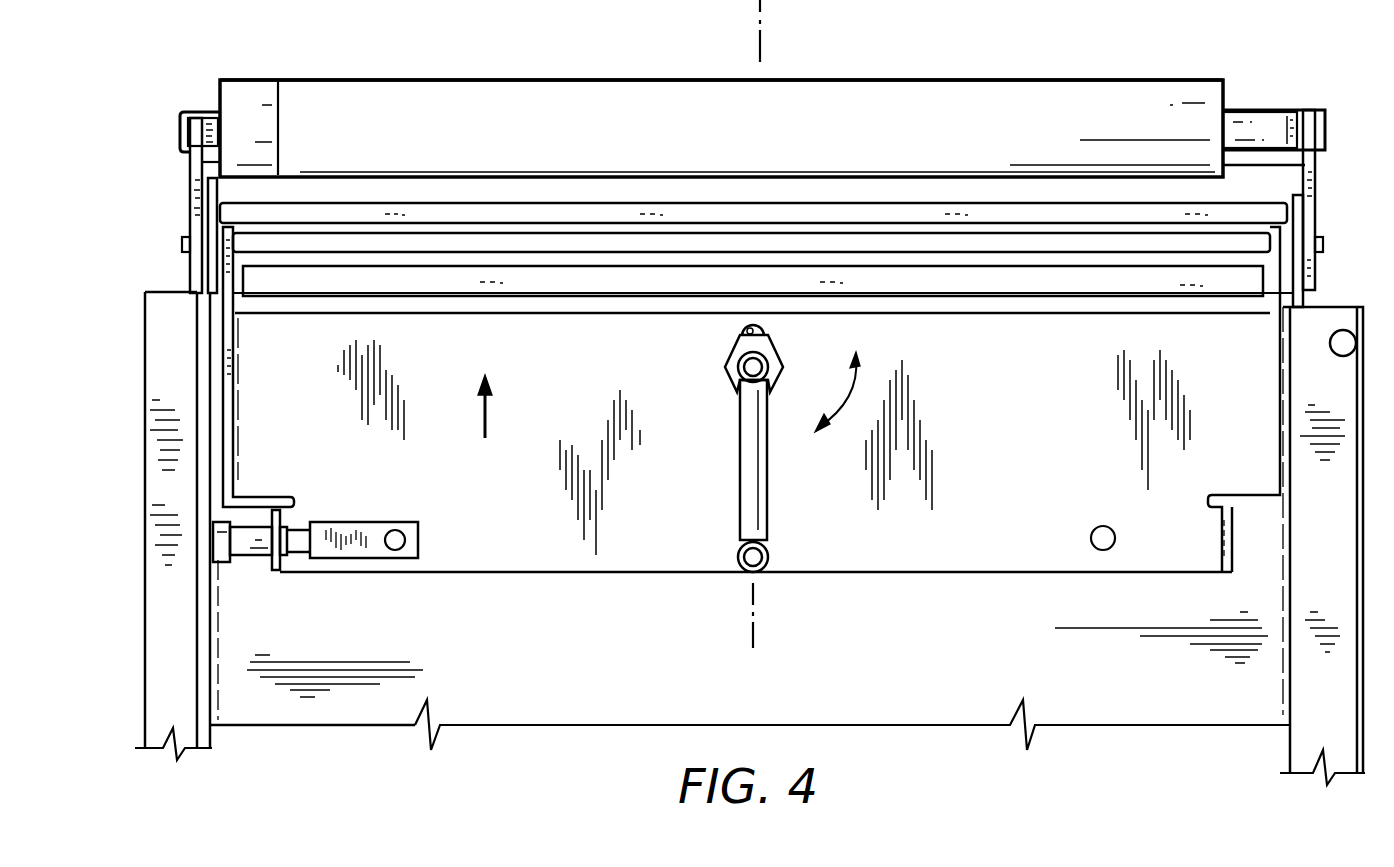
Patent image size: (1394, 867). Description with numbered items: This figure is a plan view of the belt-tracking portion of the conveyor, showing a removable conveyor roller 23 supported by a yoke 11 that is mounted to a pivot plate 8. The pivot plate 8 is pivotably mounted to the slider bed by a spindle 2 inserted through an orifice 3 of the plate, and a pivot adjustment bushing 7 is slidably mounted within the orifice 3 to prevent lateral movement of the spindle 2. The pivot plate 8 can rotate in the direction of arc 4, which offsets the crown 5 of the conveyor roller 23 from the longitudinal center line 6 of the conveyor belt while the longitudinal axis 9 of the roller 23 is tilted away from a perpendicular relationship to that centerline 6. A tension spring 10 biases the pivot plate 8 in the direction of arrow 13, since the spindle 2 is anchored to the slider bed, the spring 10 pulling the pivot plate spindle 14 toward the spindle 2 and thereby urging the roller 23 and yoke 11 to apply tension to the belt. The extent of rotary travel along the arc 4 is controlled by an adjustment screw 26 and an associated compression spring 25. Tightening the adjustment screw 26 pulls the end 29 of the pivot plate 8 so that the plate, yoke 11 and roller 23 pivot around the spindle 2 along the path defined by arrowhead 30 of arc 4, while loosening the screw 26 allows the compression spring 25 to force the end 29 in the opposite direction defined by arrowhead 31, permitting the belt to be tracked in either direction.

The spindle 2 is at (740, 370).
The orifice 3 is at (743, 333).
The arc 4 is at (838, 398).
The crown 5 is at (688, 80).
The longitudinal center line 6 is at (755, 641).
The pivot adjustment bushing 7 is at (772, 362).
The pivot plate 8 is at (985, 572).
The longitudinal axis 9 is at (1266, 115).
The tension spring 10 is at (747, 432).
The yoke 11 is at (198, 180).
The arrow 13 is at (480, 412).
The pivot plate spindle 14 is at (760, 555).
The conveyor roller 23 is at (1118, 95).
The compression spring 25 is at (242, 543).
The adjustment screw 26 is at (297, 540).
The end 29 is at (268, 568).
The arrowhead 30 is at (815, 434).
The arrowhead 31 is at (857, 356).